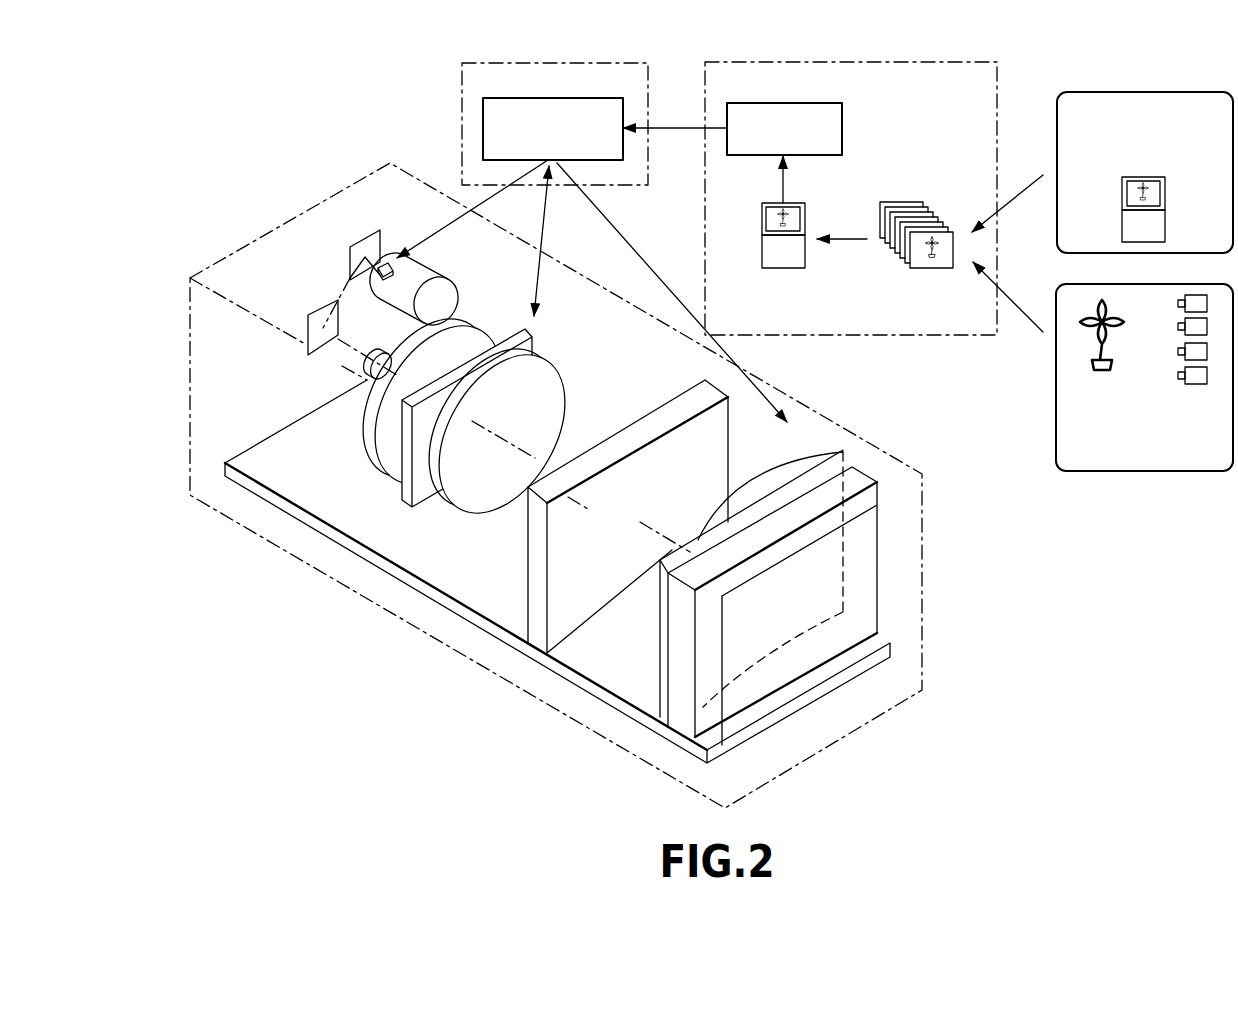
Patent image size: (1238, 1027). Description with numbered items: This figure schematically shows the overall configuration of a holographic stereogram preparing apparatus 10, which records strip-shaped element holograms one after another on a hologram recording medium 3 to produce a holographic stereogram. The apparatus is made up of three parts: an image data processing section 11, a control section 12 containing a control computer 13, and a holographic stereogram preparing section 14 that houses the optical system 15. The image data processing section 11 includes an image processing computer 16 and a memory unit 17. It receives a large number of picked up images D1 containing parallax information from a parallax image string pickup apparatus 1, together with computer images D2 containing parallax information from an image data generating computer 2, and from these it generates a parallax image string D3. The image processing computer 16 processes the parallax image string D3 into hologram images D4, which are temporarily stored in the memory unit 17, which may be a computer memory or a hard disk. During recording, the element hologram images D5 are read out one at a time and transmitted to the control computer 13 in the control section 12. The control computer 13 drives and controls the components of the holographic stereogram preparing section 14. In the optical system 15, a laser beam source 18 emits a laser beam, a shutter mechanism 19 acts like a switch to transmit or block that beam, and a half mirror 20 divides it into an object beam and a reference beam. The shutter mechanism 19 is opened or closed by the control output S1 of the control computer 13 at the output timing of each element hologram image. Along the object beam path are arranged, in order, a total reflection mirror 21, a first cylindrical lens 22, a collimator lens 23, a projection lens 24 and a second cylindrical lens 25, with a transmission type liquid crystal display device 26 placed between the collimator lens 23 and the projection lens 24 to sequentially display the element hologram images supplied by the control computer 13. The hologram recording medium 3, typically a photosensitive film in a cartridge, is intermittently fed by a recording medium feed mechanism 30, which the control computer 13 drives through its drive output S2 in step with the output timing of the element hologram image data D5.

The parallax image string pickup apparatus 1 is at (1168, 471).
The image data generating computer 2 is at (1170, 92).
The hologram recording medium 3 is at (768, 652).
The holographic stereogram preparing apparatus 10 is at (300, 108).
The image data processing section 11 is at (1000, 88).
The control section 12 is at (459, 87).
The control computer 13 is at (548, 98).
The holographic stereogram preparing section 14 is at (447, 647).
The optical system 15 is at (387, 457).
The image processing computer 16 is at (762, 233).
The memory unit 17 is at (843, 125).
The laser beam source 18 is at (417, 268).
The shutter mechanism 19 is at (386, 262).
The half mirror 20 is at (352, 242).
The total reflection mirror 21 is at (317, 307).
The first cylindrical lens 22 is at (372, 383).
The collimator lens 23 is at (388, 481).
The projection lens 24 is at (540, 388).
The second cylindrical lens 25 is at (525, 592).
The transmission type liquid crystal display device 26 is at (410, 507).
The recording medium feed mechanism 30 is at (878, 568).
The picked up images D1 is at (1019, 308).
The computer images D2 is at (1026, 183).
The parallax image string D3 is at (906, 202).
The hologram images D4 is at (786, 190).
The element hologram images D5 is at (673, 127).
The control output S1 is at (434, 233).
The drive output S2 is at (790, 386).